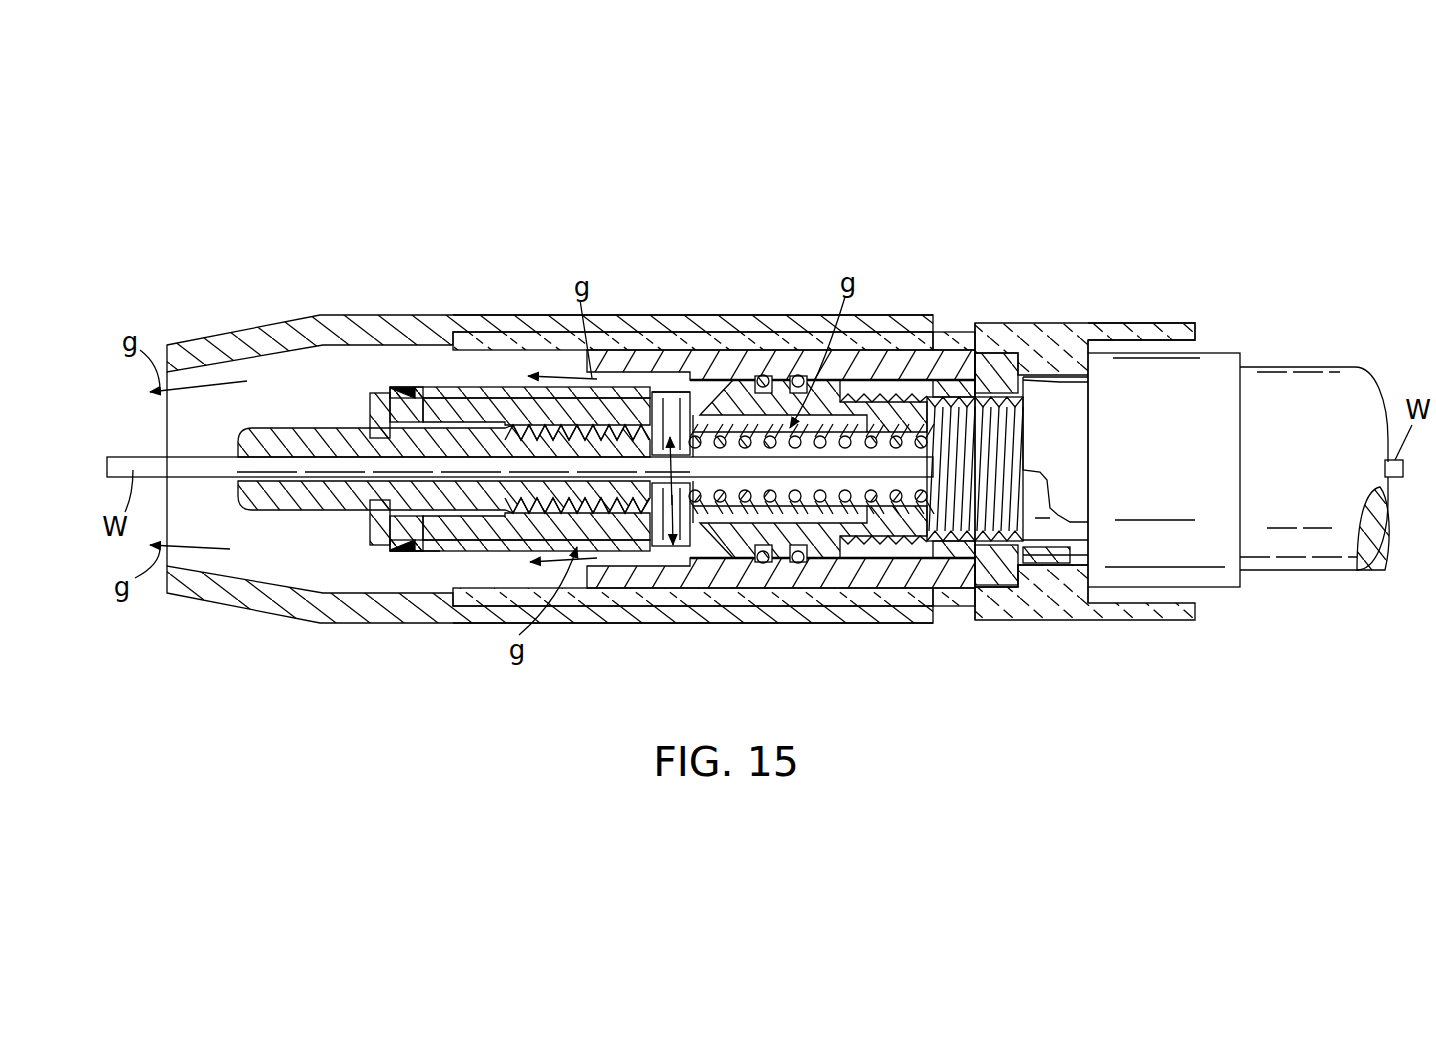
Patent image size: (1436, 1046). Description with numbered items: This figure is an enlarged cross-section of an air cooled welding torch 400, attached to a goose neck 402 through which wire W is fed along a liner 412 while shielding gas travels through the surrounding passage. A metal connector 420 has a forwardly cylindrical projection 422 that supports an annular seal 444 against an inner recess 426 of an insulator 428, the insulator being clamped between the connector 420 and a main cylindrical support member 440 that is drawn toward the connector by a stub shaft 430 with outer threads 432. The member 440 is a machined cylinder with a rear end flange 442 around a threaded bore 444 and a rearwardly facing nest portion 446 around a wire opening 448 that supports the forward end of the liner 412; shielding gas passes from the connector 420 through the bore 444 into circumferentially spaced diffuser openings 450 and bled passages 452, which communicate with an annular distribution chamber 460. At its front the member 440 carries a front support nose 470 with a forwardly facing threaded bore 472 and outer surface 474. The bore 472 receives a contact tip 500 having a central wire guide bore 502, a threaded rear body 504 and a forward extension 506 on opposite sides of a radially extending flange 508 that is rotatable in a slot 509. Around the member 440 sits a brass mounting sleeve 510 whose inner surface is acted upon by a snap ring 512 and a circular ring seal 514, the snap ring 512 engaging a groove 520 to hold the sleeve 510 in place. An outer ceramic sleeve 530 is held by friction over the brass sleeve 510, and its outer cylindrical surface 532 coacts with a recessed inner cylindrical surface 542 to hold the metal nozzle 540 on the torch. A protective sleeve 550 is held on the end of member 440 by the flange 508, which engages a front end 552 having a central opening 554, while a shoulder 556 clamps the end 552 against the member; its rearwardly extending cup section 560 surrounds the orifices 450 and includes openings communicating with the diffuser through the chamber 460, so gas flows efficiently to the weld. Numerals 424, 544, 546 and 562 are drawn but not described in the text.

The torch 400 is at (1143, 198).
The goose neck 402 is at (1340, 367).
The liner 412 is at (930, 398).
The metal connector 420 is at (1232, 353).
The forwardly cylindrical projection 422 is at (1040, 505).
The seal 424 is at (1055, 575).
The inner recess 426 is at (1060, 380).
The insulator 428 is at (1163, 323).
The stub shaft 430 is at (905, 535).
The outer threads 432 is at (1000, 590).
The main cylindrical support member 440 is at (575, 600).
The rear end flange 442 is at (1005, 324).
The threaded bore 444 is at (940, 560).
The rearwardly facing nest portion 446 is at (700, 545).
The wire opening 448 is at (608, 552).
The diffuser openings 450 is at (705, 532).
The bled passages 452 is at (640, 540).
The annular distribution chamber 460 is at (650, 392).
The front support nose 470 is at (435, 398).
The forwardly facing threaded bore 472 is at (478, 400).
The outer surface 474 is at (533, 388).
The contact tip 500 is at (282, 515).
The central wire guide bore 502 is at (312, 438).
The threaded rear body 504 is at (498, 540).
The forward extension 506 is at (310, 380).
The radially extending flange 508 is at (369, 393).
The slot 509 is at (369, 522).
The brass mounting sleeve 510 is at (905, 352).
The snap ring 512 is at (757, 376).
The circular ring seal 514 is at (803, 376).
The groove 520 is at (790, 560).
The outer ceramic sleeve 530 is at (728, 352).
The outer cylindrical surface 532 is at (870, 334).
The metal nozzle 540 is at (558, 310).
The recessed inner cylindrical surface 542 is at (509, 315).
The housing end 544 is at (198, 600).
The housing end 546 is at (930, 625).
The protective sleeve 550 is at (442, 556).
The front end 552 is at (330, 557).
The central opening 554 is at (405, 530).
The shoulder 556 is at (485, 590).
The rearwardly extending cup section 560 is at (655, 395).
The spacer 562 is at (675, 440).